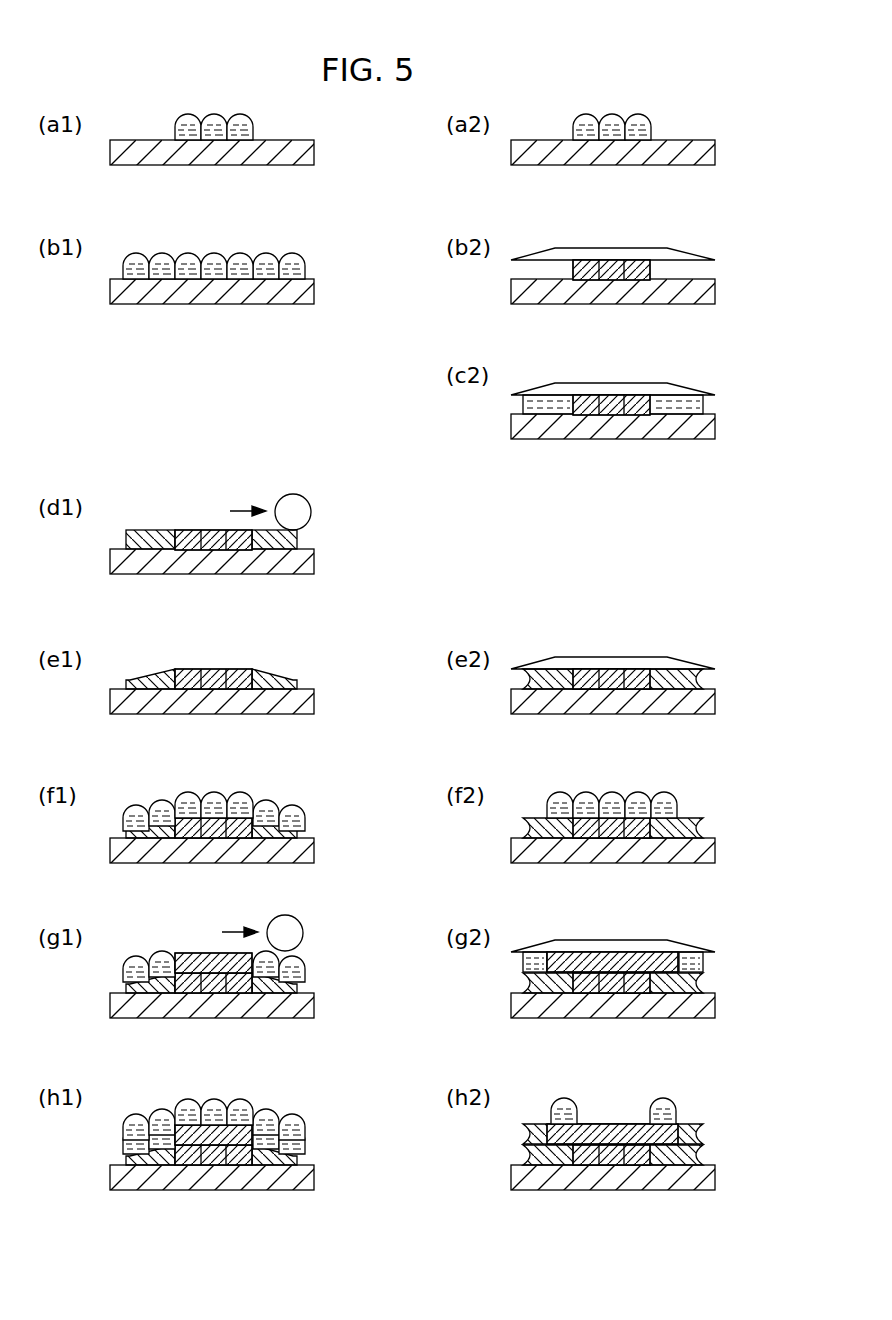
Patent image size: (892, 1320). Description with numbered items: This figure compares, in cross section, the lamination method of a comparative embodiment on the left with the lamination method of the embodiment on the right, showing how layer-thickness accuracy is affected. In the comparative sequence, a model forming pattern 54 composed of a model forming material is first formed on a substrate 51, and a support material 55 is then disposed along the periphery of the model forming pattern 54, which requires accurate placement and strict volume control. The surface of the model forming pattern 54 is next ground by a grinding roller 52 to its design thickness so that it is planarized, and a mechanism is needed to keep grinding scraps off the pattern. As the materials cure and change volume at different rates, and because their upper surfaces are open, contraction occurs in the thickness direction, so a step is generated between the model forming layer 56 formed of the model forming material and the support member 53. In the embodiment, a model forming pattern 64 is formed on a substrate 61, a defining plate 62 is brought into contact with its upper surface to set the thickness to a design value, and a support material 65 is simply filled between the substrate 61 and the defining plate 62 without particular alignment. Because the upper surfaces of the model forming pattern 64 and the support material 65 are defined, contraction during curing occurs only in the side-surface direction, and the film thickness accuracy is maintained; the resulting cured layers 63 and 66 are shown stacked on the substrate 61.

The substrate 51 is at (306, 151).
The grinding roller 52 is at (308, 506).
The support member 53 is at (148, 680).
The model forming pattern 54 is at (238, 116).
The support material 55 is at (128, 257).
The model forming layer 56 is at (236, 669).
The substrate 61 is at (706, 151).
The defining plate 62 is at (673, 254).
The insulating layer 63 is at (684, 681).
The model forming pattern 64 is at (640, 116).
The support material 65 is at (697, 403).
The conductive layer 66 is at (638, 680).